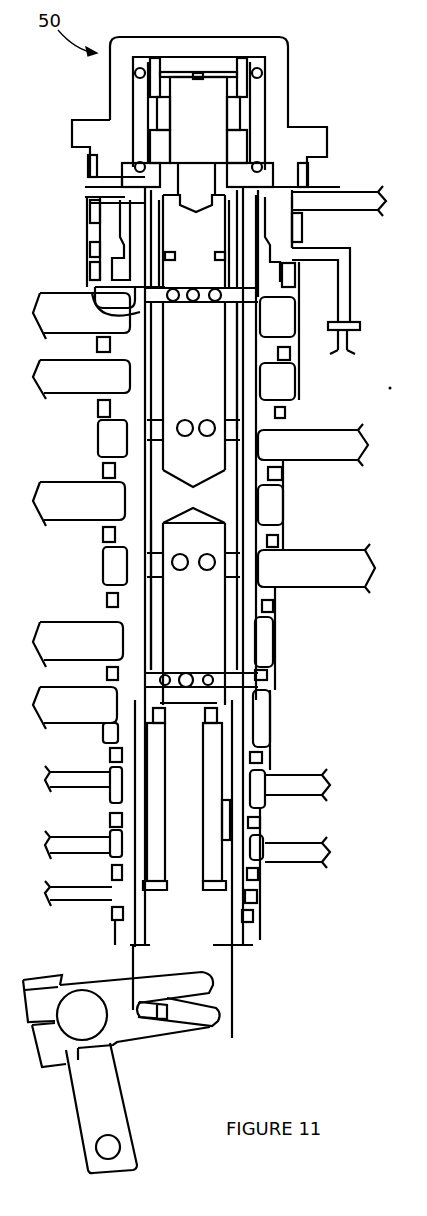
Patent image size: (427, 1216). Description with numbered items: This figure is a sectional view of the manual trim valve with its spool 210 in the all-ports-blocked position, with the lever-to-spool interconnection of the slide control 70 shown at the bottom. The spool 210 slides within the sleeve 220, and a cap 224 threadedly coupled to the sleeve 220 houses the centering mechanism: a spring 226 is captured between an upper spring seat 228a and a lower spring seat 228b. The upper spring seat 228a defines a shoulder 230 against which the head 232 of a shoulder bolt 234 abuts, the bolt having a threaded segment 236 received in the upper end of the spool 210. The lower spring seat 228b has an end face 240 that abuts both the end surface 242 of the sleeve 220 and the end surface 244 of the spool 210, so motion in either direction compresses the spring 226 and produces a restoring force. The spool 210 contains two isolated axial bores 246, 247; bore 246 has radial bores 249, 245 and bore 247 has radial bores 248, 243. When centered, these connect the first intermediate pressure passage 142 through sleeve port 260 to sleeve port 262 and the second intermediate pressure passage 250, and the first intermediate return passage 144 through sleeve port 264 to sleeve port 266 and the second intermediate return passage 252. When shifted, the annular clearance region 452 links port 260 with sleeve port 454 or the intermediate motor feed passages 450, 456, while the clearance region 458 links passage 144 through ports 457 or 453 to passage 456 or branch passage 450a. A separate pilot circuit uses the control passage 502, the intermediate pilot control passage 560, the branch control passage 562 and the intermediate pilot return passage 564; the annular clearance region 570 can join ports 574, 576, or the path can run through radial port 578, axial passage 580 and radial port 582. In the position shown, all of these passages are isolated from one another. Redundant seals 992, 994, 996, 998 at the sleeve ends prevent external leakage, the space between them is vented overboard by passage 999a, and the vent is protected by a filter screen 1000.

The slide control 70 is at (148, 1149).
The first intermediate pressure passage 142 is at (360, 455).
The first intermediate return passage 144 is at (360, 586).
The spool 210 is at (194, 506).
The sleeve 220 is at (292, 408).
The cap 224 is at (280, 89).
The spring 226 is at (263, 73).
The upper spring seat 228a is at (257, 66).
The lower spring seat 228b is at (309, 169).
The shoulder 230 is at (163, 89).
The head 232 is at (172, 73).
The shoulder bolt 234 is at (216, 131).
The threaded segment 236 is at (172, 200).
The end face 240 is at (130, 180).
The end surface 242 is at (132, 190).
The radial bores 243 is at (190, 672).
The end surface 244 is at (162, 200).
The radial bores 245 is at (216, 326).
The axial bore 246 is at (212, 371).
The axial bore 247 is at (208, 633).
The radial bores 248 is at (208, 555).
The radial bores 249 is at (221, 468).
The second intermediate pressure passage 250 is at (78, 324).
The second intermediate return passage 252 is at (81, 717).
The sleeve port 260 is at (282, 475).
The sleeve port 262 is at (95, 292).
The sleeve port 264 is at (274, 608).
The sleeve port 266 is at (115, 724).
The intermediate motor feed passage 450 is at (82, 388).
The branch passage 450a is at (80, 654).
The annular clearance region 452 is at (236, 408).
The ports 453 is at (133, 637).
The sleeve port 454 is at (97, 345).
The second intermediate motor feed passage 456 is at (85, 514).
The ports 457 is at (128, 512).
The clearance region 458 is at (141, 590).
The control passage 502 is at (310, 776).
The intermediate pilot control passage 560 is at (93, 782).
The branch control passage 562 is at (282, 853).
The intermediate pilot return passage 564 is at (88, 848).
The annular clearance region 570 is at (262, 825).
The port 574 is at (265, 775).
The port 576 is at (261, 874).
The radial port 578 is at (243, 734).
The axial passage 580 is at (214, 758).
The radial port 582 is at (214, 831).
The seal 992 is at (302, 230).
The seal 994 is at (300, 380).
The seal 996 is at (112, 873).
The seal 998 is at (112, 912).
The vent passage 999a is at (347, 273).
The filter screen 1000 is at (337, 334).